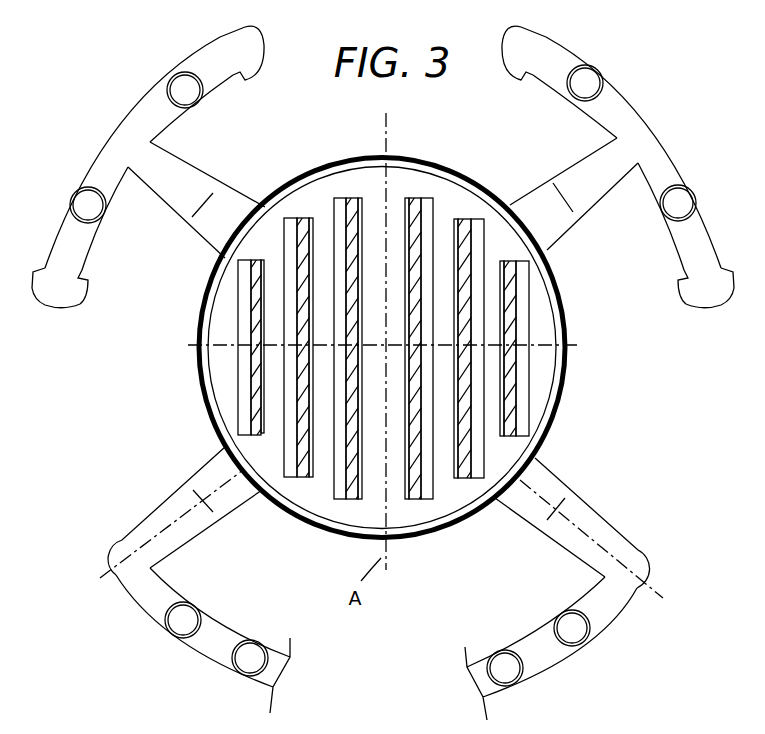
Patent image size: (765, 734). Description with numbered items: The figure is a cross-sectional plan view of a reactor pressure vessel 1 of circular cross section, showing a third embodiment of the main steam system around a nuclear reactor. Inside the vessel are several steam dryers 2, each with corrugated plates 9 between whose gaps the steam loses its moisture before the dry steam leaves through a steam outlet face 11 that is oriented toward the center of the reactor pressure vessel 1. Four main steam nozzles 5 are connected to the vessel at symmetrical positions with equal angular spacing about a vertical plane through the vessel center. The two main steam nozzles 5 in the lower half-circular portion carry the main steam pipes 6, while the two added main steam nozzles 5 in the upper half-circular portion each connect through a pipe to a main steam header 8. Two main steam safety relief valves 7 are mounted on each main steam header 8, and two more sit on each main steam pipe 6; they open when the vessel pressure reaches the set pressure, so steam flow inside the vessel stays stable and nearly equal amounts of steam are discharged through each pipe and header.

The reactor pressure vessel 1 is at (404, 157).
The steam dryer 2 is at (238, 397).
The main steam nozzle 5 is at (225, 203).
The main steam pipe 6 is at (162, 517).
The main steam safety relief valve 7 is at (190, 70).
The main steam header 8 is at (122, 140).
The corrugated plate 9 is at (253, 296).
The steam outlet face 11 is at (267, 360).